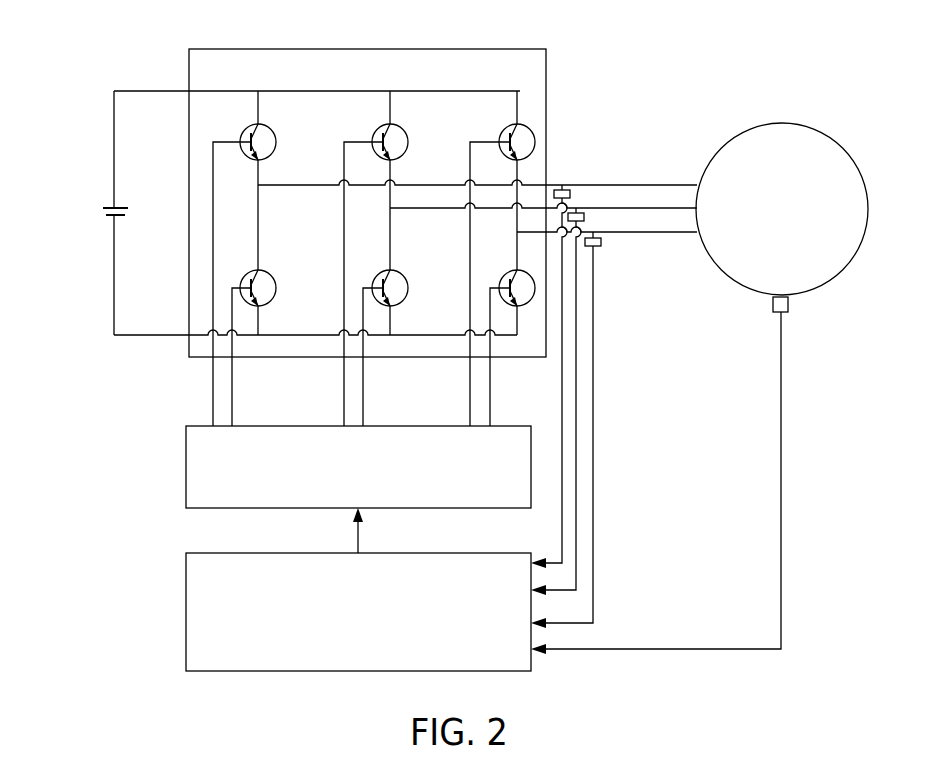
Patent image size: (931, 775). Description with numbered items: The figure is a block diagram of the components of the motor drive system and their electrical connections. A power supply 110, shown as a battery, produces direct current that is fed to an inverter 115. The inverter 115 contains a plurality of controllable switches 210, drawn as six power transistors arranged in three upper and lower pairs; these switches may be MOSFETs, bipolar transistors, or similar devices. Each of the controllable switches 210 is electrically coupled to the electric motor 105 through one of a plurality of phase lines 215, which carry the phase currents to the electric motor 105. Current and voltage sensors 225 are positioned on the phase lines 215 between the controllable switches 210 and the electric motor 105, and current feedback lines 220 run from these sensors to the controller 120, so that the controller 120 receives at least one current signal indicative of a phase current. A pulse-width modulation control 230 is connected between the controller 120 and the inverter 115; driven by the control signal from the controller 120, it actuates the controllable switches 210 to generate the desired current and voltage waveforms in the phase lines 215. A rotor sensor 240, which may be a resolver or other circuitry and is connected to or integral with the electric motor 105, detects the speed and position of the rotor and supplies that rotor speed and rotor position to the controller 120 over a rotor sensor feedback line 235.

The electric motor 105 is at (730, 282).
The power supply 110 is at (548, 60).
The inverter 115 is at (94, 222).
The controller 120 is at (186, 572).
The controllable switches 210 is at (266, 271).
The phase lines 215 is at (580, 185).
The current feedback lines 220 is at (594, 377).
The current and voltage sensors 225 is at (601, 242).
The pulse-width modulation control 230 is at (186, 474).
The rotor sensor feedback line 235 is at (781, 414).
The rotor sensor 240 is at (789, 304).